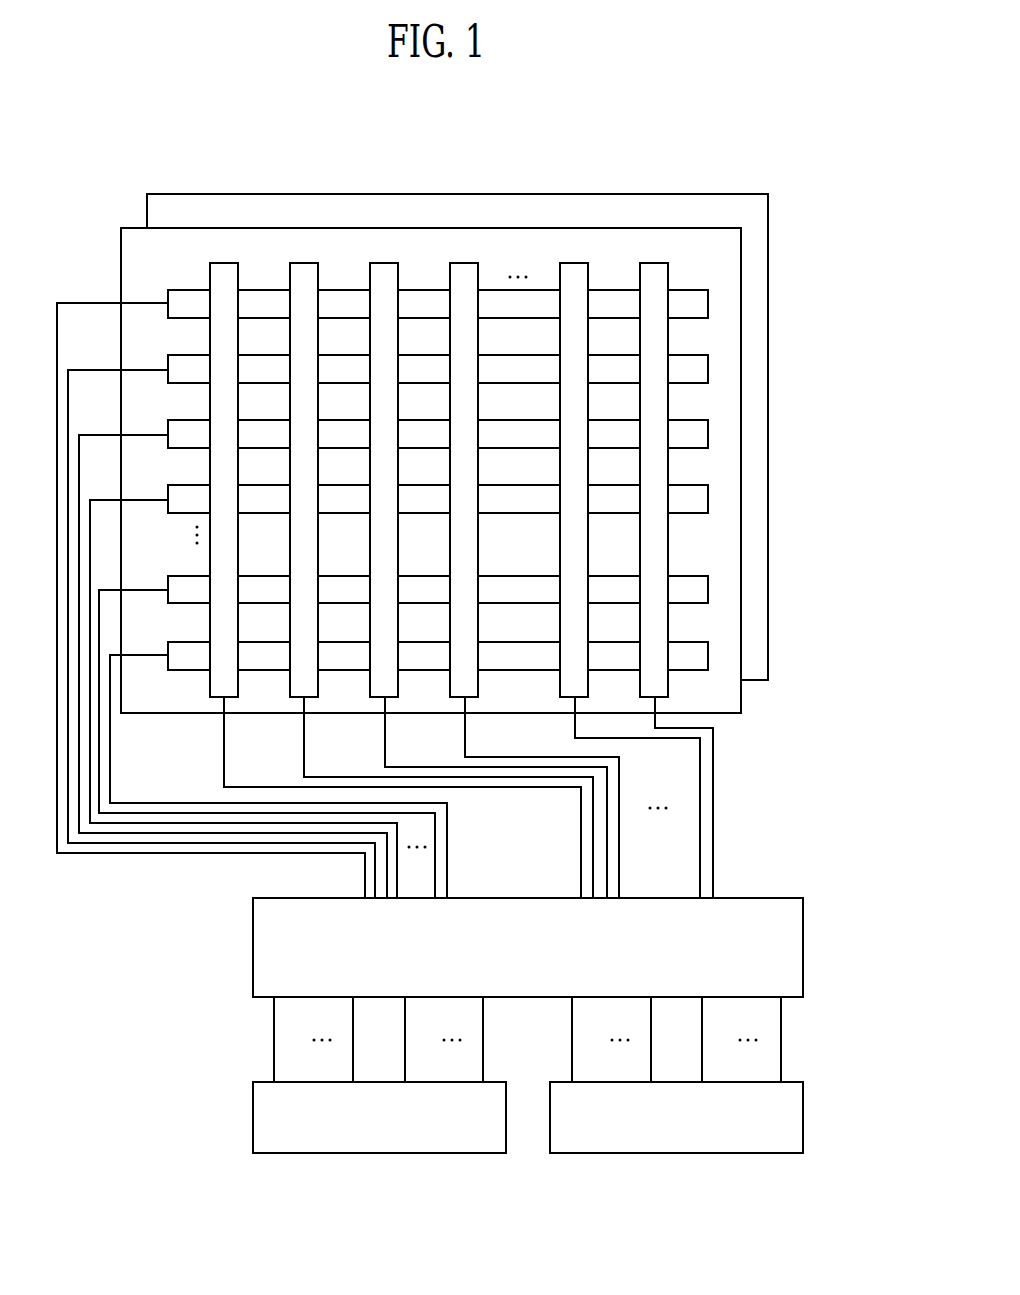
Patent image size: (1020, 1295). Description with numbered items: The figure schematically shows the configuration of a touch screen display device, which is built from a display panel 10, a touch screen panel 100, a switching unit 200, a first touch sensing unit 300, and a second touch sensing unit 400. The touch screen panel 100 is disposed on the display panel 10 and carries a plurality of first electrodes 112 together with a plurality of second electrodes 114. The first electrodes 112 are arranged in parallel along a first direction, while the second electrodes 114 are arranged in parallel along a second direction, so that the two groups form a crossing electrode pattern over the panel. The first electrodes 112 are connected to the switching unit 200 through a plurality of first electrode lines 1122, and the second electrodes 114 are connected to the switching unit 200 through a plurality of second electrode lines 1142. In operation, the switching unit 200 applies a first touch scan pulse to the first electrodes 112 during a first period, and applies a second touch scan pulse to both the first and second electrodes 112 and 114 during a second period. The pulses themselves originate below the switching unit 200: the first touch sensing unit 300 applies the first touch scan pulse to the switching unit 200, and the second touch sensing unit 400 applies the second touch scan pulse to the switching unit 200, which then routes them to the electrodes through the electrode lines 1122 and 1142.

The display panel 10 is at (687, 194).
The touch screen panel 100 is at (508, 228).
The first electrodes 112 is at (708, 300).
The second electrodes 114 is at (320, 275).
The first electrode lines 1122 is at (85, 303).
The second electrode lines 1142 is at (713, 767).
The switching unit 200 is at (509, 946).
The first touch sensing unit 300 is at (362, 1129).
The second touch sensing unit 400 is at (659, 1129).